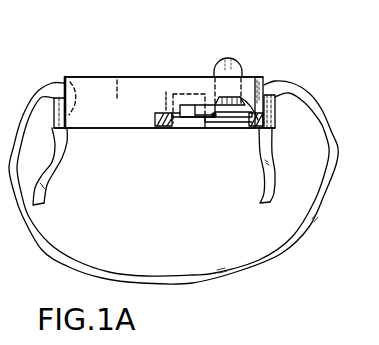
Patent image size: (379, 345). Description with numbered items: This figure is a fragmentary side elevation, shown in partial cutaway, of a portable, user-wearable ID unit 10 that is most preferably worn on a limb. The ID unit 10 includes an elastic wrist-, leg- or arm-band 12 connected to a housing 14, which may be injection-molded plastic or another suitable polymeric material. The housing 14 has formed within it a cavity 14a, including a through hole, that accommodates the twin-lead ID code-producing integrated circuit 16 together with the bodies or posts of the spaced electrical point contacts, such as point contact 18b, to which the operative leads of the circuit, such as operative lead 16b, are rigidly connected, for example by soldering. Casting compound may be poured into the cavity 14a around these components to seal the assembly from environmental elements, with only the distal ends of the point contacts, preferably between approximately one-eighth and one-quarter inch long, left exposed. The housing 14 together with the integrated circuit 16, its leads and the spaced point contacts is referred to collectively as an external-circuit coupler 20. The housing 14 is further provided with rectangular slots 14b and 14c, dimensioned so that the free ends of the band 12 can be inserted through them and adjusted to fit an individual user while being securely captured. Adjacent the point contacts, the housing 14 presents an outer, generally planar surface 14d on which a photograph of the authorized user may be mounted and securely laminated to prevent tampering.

The ID unit 10 is at (293, 42).
The band 12 is at (297, 242).
The housing 14 is at (133, 123).
The cavity 14a is at (182, 129).
The rectangular slot 14b is at (72, 78).
The rectangular slot 14c is at (265, 80).
The outer planar surface 14d is at (125, 78).
The ID code-producing integrated circuit 16 is at (185, 92).
The operative lead 16b is at (204, 130).
The point contact 18b is at (231, 57).
The external-circuit coupler 20 is at (243, 146).